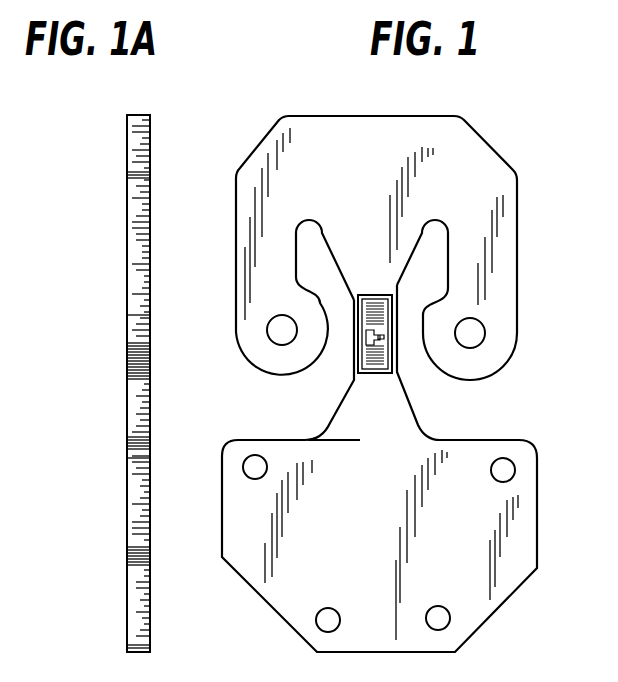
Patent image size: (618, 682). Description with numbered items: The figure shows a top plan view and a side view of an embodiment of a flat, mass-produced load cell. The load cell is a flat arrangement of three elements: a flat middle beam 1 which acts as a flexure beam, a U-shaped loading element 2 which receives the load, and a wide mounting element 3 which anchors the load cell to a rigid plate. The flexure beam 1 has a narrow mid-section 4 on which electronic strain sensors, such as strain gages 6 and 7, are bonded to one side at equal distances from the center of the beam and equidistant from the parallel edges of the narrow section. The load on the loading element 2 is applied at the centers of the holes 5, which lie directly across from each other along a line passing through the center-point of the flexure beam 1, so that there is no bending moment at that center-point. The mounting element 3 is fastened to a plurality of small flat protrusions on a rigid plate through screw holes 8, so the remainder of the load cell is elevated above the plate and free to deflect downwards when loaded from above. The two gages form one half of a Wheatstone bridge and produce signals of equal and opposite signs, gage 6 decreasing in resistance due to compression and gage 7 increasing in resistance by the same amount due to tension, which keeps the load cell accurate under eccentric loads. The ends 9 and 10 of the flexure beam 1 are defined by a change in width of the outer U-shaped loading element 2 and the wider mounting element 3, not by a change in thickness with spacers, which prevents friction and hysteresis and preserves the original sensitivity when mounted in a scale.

In FIG. 1A, the flat middle beam 1 is at (127, 383).
In FIG. 1, the flat middle beam 1 is at (380, 415).
In FIG. 1A, the U-shaped loading element 2 is at (150, 152).
In FIG. 1, the U-shaped loading element 2 is at (442, 124).
In FIG. 1A, the wide mounting element 3 is at (152, 595).
In FIG. 1, the wide mounting element 3 is at (255, 580).
In FIG. 1, the narrow mid-section 4 is at (357, 340).
In FIG. 1A, the holes 5 is at (132, 315).
In FIG. 1, the holes 5 is at (267, 333).
In FIG. 1, the strain gage 6 is at (392, 312).
In FIG. 1, the strain gage 7 is at (387, 358).
In FIG. 1A, the screw holes 8 is at (130, 458).
In FIG. 1, the screw holes 8 is at (250, 468).
In FIG. 1, the end of the flexure beam 9 is at (354, 213).
In FIG. 1, the end of the flexure beam 10 is at (365, 448).